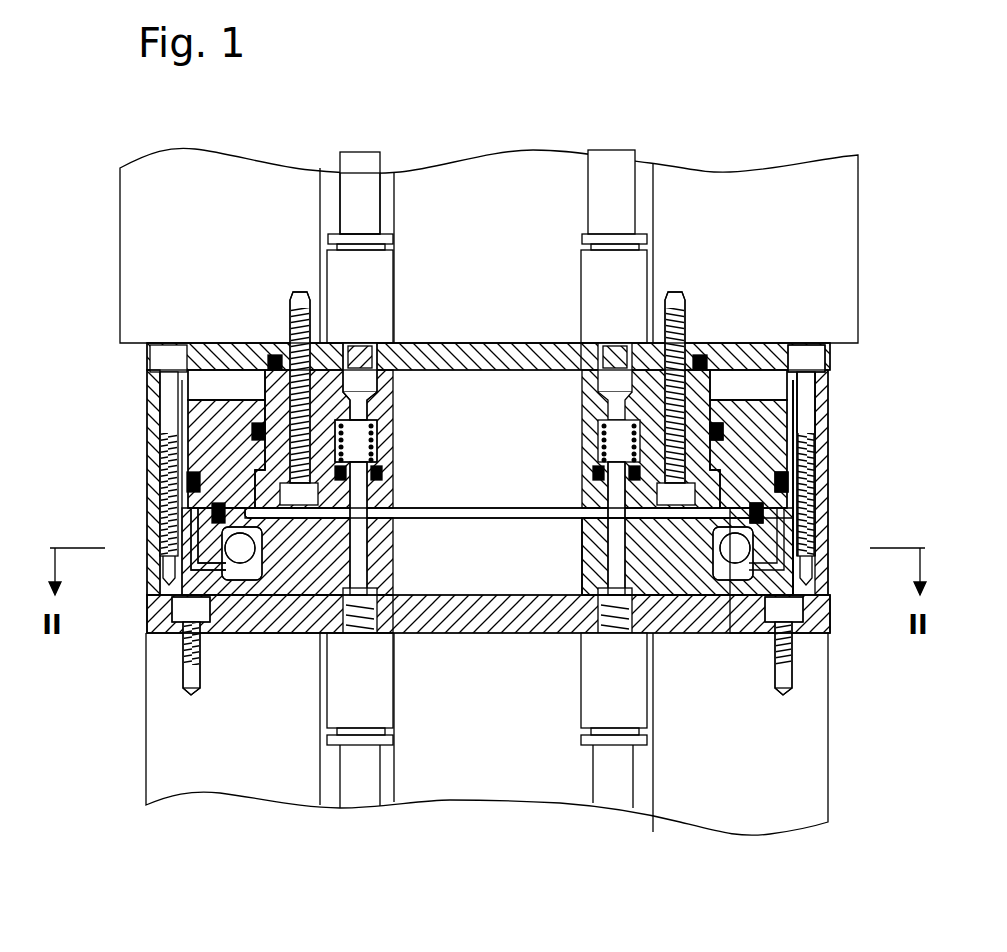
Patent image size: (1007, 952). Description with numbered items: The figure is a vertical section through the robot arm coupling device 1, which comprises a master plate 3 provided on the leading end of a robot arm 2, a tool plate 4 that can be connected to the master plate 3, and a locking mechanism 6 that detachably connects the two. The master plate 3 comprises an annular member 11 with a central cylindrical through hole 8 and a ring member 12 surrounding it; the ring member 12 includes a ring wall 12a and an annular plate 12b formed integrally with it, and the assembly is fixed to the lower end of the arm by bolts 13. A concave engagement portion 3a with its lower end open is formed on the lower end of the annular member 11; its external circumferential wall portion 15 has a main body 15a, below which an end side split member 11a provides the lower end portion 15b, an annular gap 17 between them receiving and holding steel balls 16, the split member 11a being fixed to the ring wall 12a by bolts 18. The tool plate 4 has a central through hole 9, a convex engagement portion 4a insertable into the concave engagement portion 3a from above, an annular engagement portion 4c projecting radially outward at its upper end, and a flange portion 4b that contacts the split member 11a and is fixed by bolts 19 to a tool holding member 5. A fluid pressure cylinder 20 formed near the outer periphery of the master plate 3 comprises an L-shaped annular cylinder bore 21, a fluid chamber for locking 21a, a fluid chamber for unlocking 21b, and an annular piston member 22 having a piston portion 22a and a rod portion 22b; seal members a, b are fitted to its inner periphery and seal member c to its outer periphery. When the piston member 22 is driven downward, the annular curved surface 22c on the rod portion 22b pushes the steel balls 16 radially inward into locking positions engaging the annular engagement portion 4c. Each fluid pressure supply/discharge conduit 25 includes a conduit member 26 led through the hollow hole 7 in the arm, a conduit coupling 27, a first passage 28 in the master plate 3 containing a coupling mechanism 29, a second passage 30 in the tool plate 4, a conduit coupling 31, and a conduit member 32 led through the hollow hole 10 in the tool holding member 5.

The robot arm coupling device 1 is at (838, 266).
The robot arm 2 is at (120, 255).
The master plate 3 is at (150, 522).
The concave engagement portion 3a is at (430, 522).
The tool plate 4 is at (147, 625).
The convex engagement portion 4a is at (680, 582).
The flange portion 4b is at (812, 620).
The annular engagement portion 4c is at (717, 523).
The tool holding member 5 is at (146, 757).
The locking mechanism 6 is at (237, 607).
The hollow hole 7 is at (653, 200).
The cylindrical through hole 8 is at (564, 347).
The cylindrical through hole 9 is at (578, 556).
The hollow hole 10 is at (653, 788).
The annular member 11 is at (448, 343).
The end side split member 11a is at (823, 586).
The ring member 12 is at (840, 372).
The ring wall 12a is at (818, 452).
The annular plate 12b is at (739, 390).
The bolts 13 is at (684, 336).
The external circumferential wall portion 15 is at (711, 657).
The external circumferential wall portion main body 15a is at (722, 532).
The external circumferential wall portion lower end portion 15b is at (737, 562).
The steel balls 16 is at (252, 558).
The annular gap 17 is at (242, 533).
The bolts 18 is at (813, 504).
The bolts 19 is at (793, 665).
The fluid pressure cylinder 20 is at (221, 370).
The annular cylinder bore 21 is at (253, 370).
The fluid chamber for locking 21a is at (212, 362).
The fluid chamber for unlocking 21b is at (243, 470).
The annular piston member 22 is at (748, 382).
The annular piston portion 22a is at (813, 430).
The annular rod portion 22b is at (810, 478).
The annular curved surface 22c is at (183, 652).
The fluid pressure supply/discharge conduit 25 is at (385, 190).
The conduit member 26 is at (372, 216).
The conduit coupling 27 is at (372, 275).
The first passage 28 is at (378, 392).
The coupling mechanism 29 is at (386, 453).
The second passage 30 is at (369, 552).
The conduit coupling 31 is at (395, 696).
The conduit member 32 is at (382, 782).
The seal member a is at (712, 456).
The seal member b is at (750, 537).
The seal member c is at (812, 462).